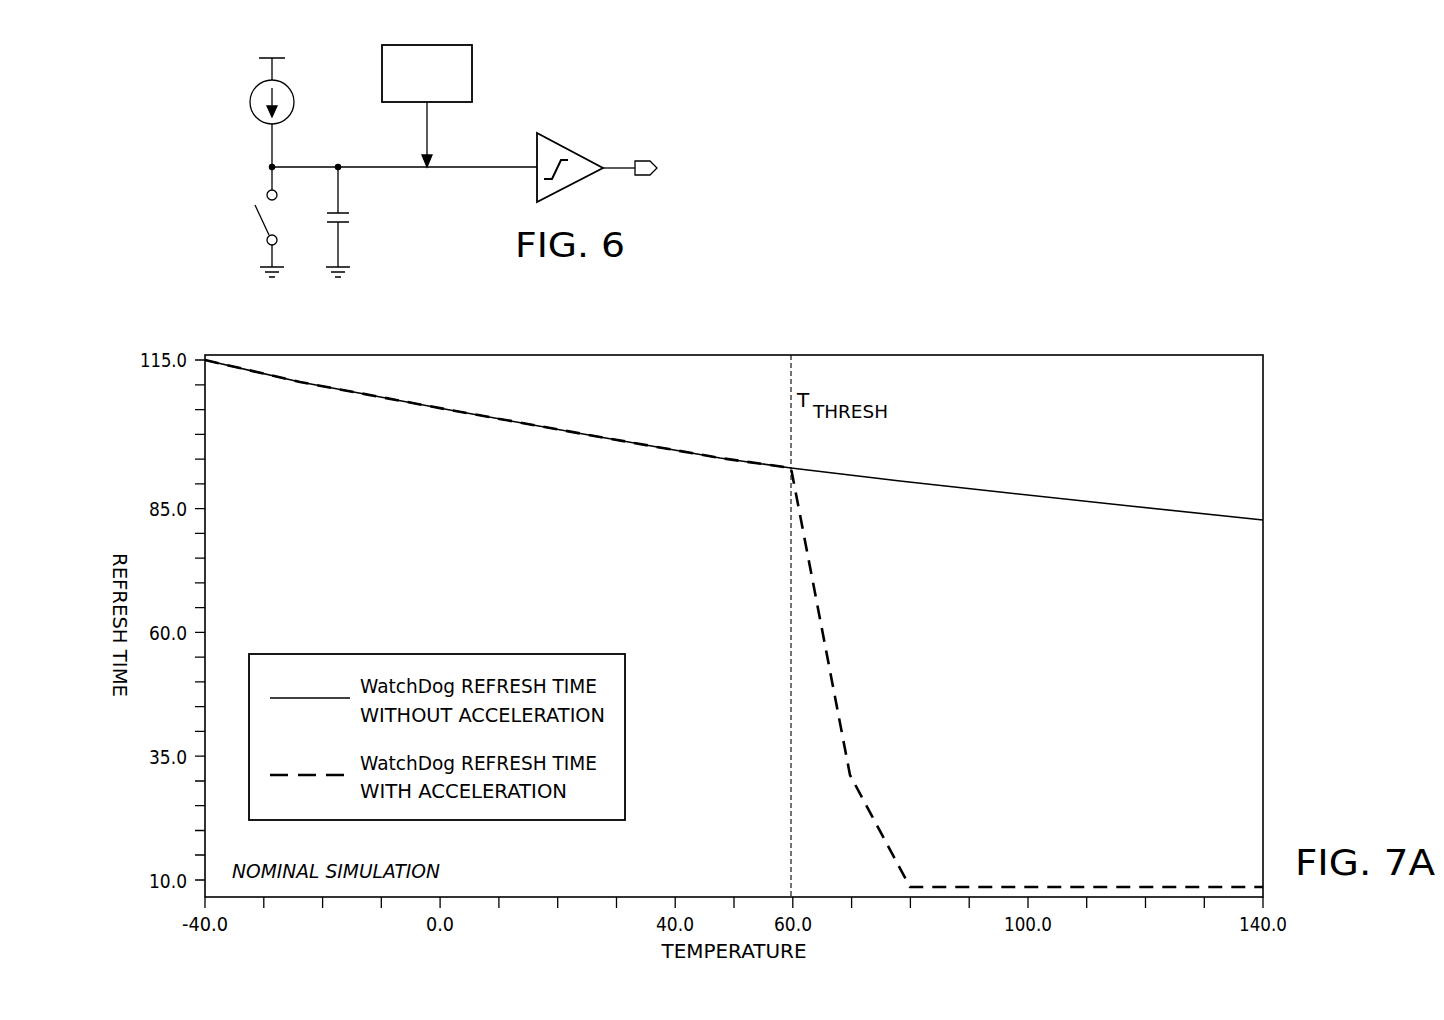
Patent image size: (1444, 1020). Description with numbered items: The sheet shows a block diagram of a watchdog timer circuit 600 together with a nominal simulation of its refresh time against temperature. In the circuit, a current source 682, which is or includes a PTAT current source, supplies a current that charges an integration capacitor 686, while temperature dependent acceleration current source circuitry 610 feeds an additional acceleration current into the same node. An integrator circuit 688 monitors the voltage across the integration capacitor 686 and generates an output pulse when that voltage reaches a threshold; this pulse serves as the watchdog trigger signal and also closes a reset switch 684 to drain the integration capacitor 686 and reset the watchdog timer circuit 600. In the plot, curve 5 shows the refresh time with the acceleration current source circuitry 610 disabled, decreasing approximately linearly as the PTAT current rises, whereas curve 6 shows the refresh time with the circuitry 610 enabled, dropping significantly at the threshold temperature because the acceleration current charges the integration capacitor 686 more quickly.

In FIG. 6, the watchdog timer circuit 600 is at (140, 124).
In FIG. 6, the current source 682 is at (250, 100).
In FIG. 6, the switch 684 is at (256, 210).
In FIG. 6, the integration capacitor 686 is at (350, 218).
In FIG. 6, the temperature dependent acceleration current source circuitry 610 is at (446, 85).
In FIG. 6, the integrator circuit 688 is at (566, 148).
In FIG. 7A, the curve 5 is at (998, 488).
In FIG. 7A, the curve 6 is at (834, 677).